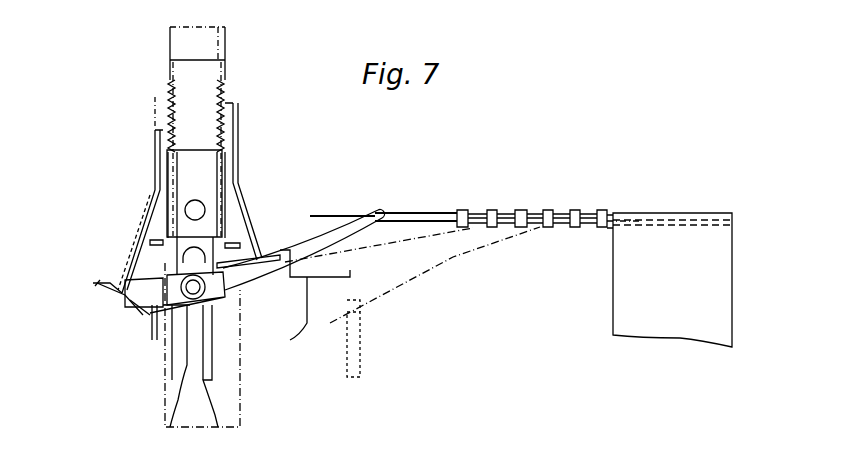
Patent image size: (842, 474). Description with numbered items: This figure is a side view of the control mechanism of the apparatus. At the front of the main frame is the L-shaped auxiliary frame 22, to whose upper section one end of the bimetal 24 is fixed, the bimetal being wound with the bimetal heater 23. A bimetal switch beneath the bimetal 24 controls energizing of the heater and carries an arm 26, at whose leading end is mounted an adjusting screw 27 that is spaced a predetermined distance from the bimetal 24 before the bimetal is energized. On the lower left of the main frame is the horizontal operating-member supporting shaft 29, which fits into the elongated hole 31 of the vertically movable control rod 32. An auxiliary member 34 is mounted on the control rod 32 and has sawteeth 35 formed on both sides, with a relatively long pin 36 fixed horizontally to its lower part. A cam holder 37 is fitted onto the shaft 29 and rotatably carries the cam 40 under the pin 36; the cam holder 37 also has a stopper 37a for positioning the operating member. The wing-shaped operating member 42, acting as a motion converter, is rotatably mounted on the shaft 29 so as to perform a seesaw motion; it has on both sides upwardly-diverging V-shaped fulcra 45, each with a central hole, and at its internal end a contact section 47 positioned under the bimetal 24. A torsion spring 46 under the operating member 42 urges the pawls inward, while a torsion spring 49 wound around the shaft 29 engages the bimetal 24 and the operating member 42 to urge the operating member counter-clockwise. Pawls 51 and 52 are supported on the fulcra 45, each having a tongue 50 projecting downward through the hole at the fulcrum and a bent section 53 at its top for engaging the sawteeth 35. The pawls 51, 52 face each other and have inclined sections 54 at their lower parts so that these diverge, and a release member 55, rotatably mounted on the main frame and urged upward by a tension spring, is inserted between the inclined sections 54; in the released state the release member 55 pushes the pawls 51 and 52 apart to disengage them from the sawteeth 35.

The L-shaped auxiliary frame 22 is at (668, 230).
The bimetal heater 23 is at (490, 212).
The bimetal 24 is at (400, 213).
The arm 26 is at (390, 352).
The adjusting screw 27 is at (355, 380).
The operating-member supporting shaft 29 is at (193, 297).
The elongated hole 31 is at (173, 423).
The control rod 32 is at (217, 423).
The auxiliary member 34 is at (185, 70).
The sawteeth 35 is at (233, 113).
The pin 36 is at (192, 200).
The cam holder 37 is at (240, 410).
The stopper 37a is at (240, 258).
The cam 40 is at (133, 305).
The operating member 42 is at (97, 283).
The V-shaped fulcrum 45 is at (110, 290).
The torsion spring 46 is at (150, 305).
The contact section 47 is at (304, 315).
The torsion spring 49 is at (337, 237).
The tongue 50 is at (140, 312).
The pawl 51 is at (155, 133).
The pawl 52 is at (238, 140).
The bent section 53 is at (163, 123).
The inclined section 54 is at (153, 205).
The release member 55 is at (143, 237).